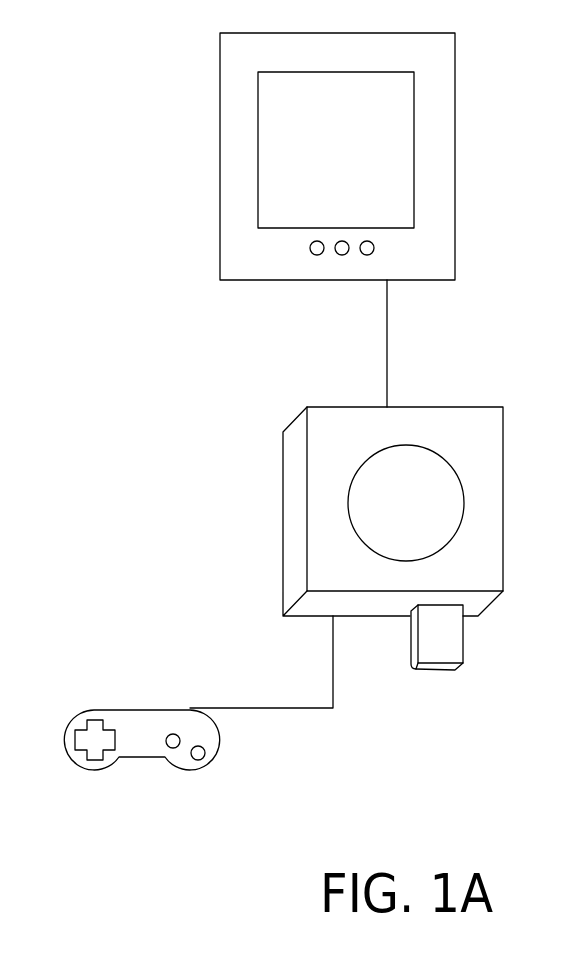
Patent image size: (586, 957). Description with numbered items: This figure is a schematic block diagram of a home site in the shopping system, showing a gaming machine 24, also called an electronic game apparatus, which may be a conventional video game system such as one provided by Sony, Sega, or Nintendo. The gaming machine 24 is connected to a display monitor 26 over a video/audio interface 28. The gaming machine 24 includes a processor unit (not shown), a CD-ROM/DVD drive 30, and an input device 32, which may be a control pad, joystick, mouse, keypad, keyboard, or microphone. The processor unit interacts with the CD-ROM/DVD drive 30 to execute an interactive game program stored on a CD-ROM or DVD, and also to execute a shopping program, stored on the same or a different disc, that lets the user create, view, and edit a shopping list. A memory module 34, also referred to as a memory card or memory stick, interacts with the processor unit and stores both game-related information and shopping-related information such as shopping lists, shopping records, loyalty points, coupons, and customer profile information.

The gaming machine 24 is at (504, 508).
The display monitor 26 is at (455, 92).
The video/audio interface 28 is at (387, 377).
The CD-ROM/DVD drive 30 is at (440, 457).
The input device 32 is at (212, 762).
The memory module 34 is at (465, 648).